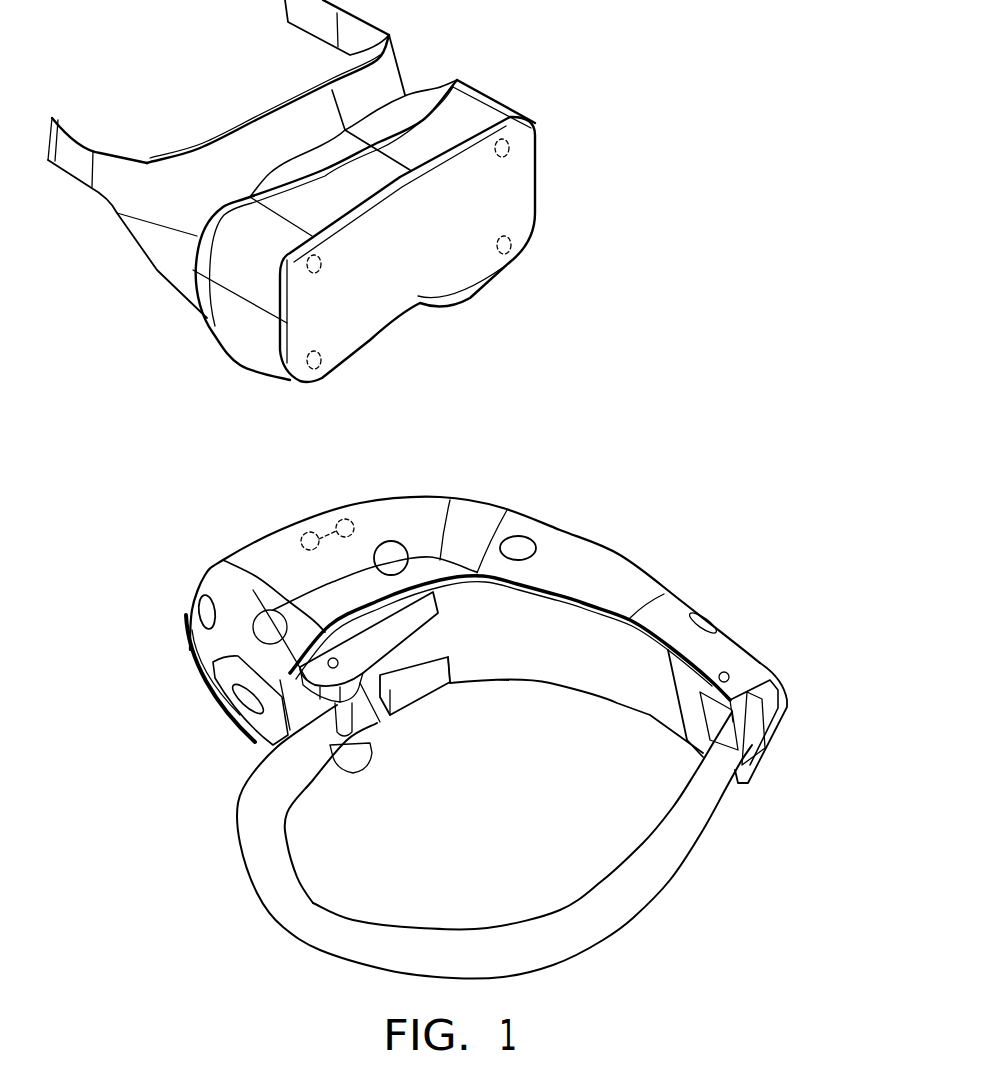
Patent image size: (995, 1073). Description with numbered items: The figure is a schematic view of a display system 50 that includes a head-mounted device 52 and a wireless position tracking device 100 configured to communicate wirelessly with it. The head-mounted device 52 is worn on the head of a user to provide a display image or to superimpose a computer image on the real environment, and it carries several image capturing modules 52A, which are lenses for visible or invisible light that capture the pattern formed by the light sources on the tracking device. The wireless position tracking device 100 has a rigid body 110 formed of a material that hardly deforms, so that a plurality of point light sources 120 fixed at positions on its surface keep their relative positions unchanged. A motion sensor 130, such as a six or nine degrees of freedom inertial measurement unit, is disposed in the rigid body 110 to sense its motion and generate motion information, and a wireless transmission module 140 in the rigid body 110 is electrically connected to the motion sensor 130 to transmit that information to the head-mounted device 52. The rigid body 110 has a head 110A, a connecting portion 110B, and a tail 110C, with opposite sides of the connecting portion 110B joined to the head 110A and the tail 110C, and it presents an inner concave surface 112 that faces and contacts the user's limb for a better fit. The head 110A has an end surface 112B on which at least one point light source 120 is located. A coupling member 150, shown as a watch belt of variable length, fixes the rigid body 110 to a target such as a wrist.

The display system 50 is at (94, 412).
The head-mounted device 52 is at (413, 293).
The image capturing module 52A is at (508, 145).
The wireless position tracking device 100 is at (639, 536).
The rigid body 110 is at (677, 613).
The head 110A is at (227, 580).
The connecting portion 110B is at (400, 512).
The tail 110C is at (733, 653).
The inner concave surface 112 is at (533, 646).
The end surface 112B is at (256, 724).
The point light source 120 is at (208, 612).
The motion sensor 130 is at (345, 537).
The wireless transmission module 140 is at (300, 526).
The coupling member 150 is at (673, 870).